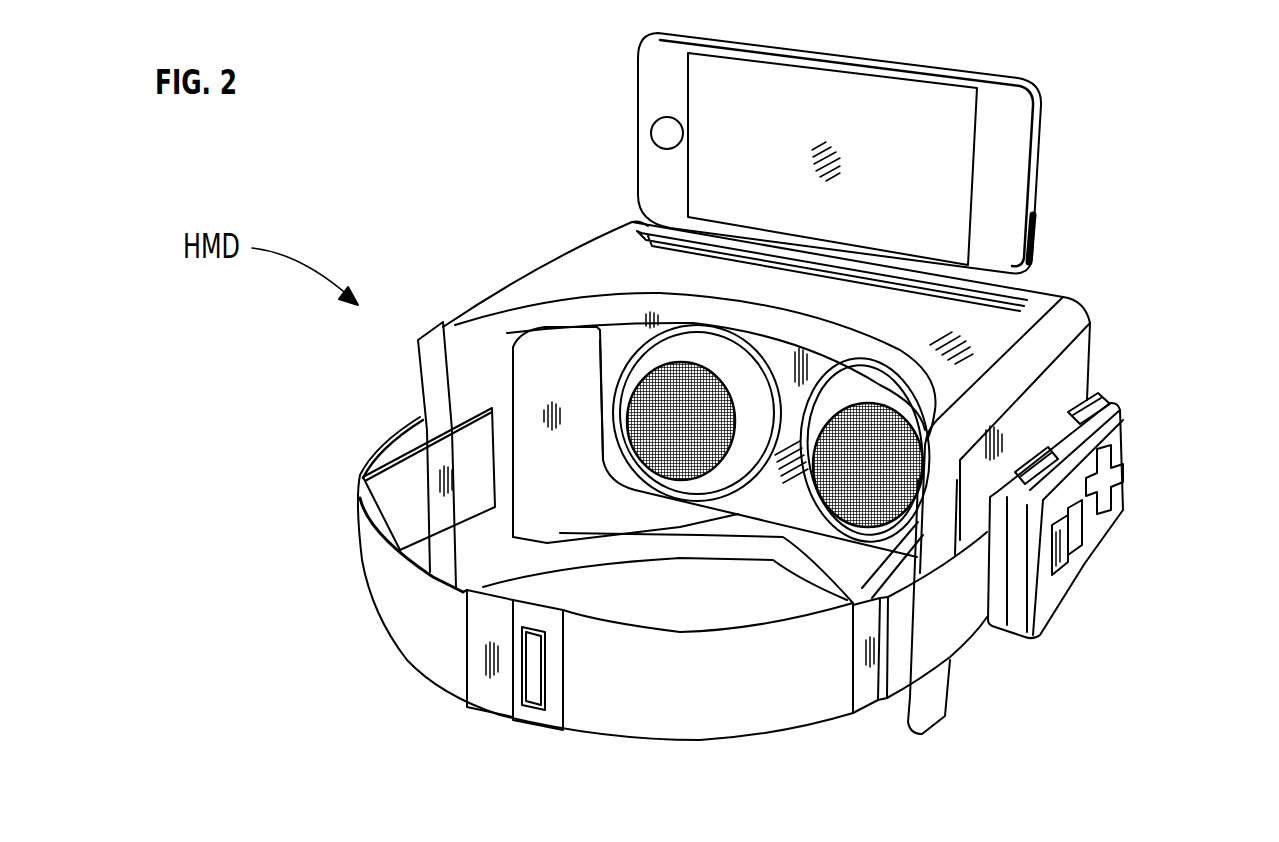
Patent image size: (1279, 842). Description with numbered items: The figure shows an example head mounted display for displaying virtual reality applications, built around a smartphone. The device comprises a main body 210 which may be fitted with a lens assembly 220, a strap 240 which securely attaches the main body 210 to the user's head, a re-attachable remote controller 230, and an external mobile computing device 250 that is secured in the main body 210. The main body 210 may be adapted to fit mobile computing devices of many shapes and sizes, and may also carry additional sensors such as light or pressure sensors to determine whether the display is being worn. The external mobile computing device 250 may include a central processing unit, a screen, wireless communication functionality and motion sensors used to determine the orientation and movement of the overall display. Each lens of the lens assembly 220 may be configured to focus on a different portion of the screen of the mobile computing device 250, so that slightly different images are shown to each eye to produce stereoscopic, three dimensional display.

The main body 210 is at (545, 250).
The lens assembly 220 is at (740, 512).
The re-attachable remote controller 230 is at (1088, 570).
The strap 240 is at (365, 565).
The external mobile computing device 250 is at (1038, 197).